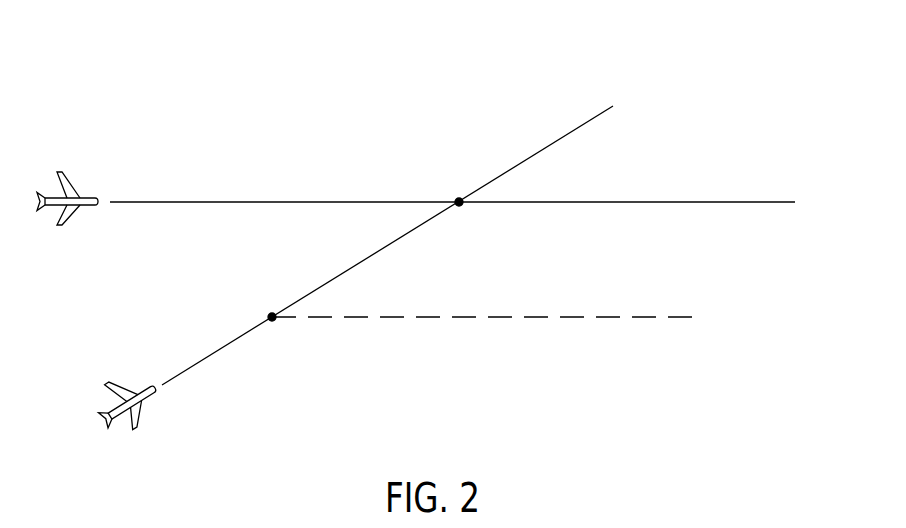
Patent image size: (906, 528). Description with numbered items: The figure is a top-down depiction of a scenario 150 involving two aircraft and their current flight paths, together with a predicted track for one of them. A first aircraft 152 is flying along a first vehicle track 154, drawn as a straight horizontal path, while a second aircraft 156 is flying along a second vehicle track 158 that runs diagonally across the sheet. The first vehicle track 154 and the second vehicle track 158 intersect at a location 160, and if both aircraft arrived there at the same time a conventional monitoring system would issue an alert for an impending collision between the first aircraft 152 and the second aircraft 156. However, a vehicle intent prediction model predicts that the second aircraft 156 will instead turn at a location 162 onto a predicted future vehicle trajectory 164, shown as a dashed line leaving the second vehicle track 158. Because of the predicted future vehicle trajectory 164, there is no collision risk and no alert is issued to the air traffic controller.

The scenario 150 is at (138, 95).
The first aircraft 152 is at (86, 196).
The first vehicle track 154 is at (773, 203).
The second aircraft 156 is at (142, 403).
The second vehicle track 158 is at (598, 110).
The location 160 is at (459, 197).
The location 162 is at (271, 313).
The predicted future vehicle trajectory 164 is at (613, 318).